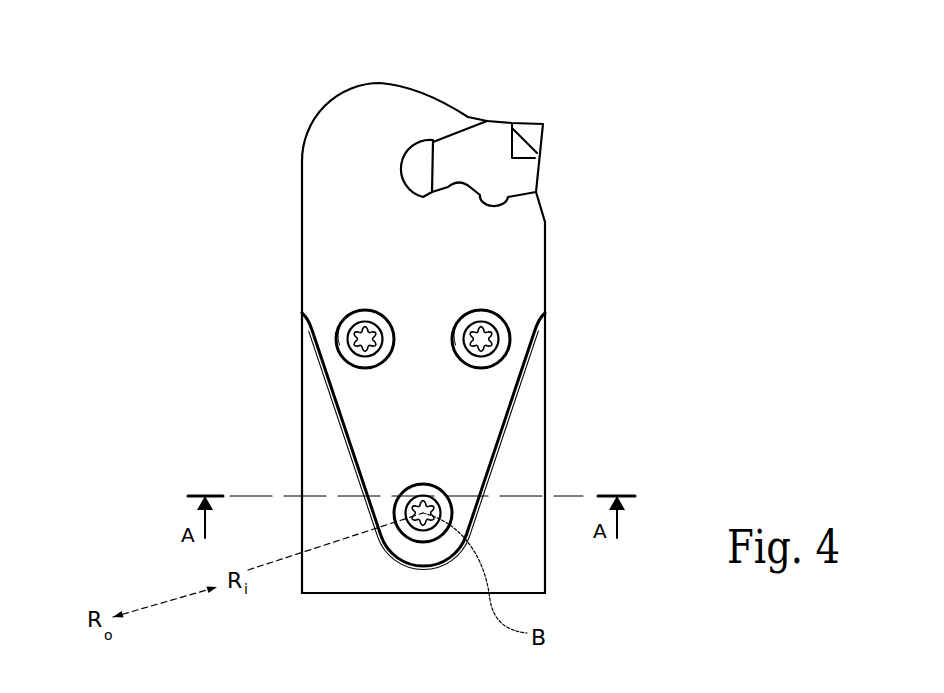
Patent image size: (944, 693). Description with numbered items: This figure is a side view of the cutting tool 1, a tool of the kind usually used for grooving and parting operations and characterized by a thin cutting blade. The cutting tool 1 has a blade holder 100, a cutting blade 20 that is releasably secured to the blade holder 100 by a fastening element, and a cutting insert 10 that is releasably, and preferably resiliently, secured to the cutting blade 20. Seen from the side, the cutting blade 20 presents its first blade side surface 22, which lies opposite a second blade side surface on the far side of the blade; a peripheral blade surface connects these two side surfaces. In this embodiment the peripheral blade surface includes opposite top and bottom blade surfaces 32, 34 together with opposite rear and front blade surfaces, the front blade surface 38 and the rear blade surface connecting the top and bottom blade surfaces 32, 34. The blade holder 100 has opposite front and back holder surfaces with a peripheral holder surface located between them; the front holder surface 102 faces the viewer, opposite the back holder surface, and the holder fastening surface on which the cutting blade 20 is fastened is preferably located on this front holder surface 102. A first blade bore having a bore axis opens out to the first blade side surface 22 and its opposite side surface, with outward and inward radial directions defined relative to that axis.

The cutting tool 1 is at (156, 222).
The cutting insert 10 is at (550, 103).
The cutting blade 20 is at (288, 100).
The first blade side surface 22 is at (520, 252).
The top blade surface 32 is at (547, 275).
The bottom blade surface 34 is at (300, 205).
The front blade surface 38 is at (373, 82).
The blade holder 100 is at (265, 411).
The front holder surface 102 is at (530, 437).